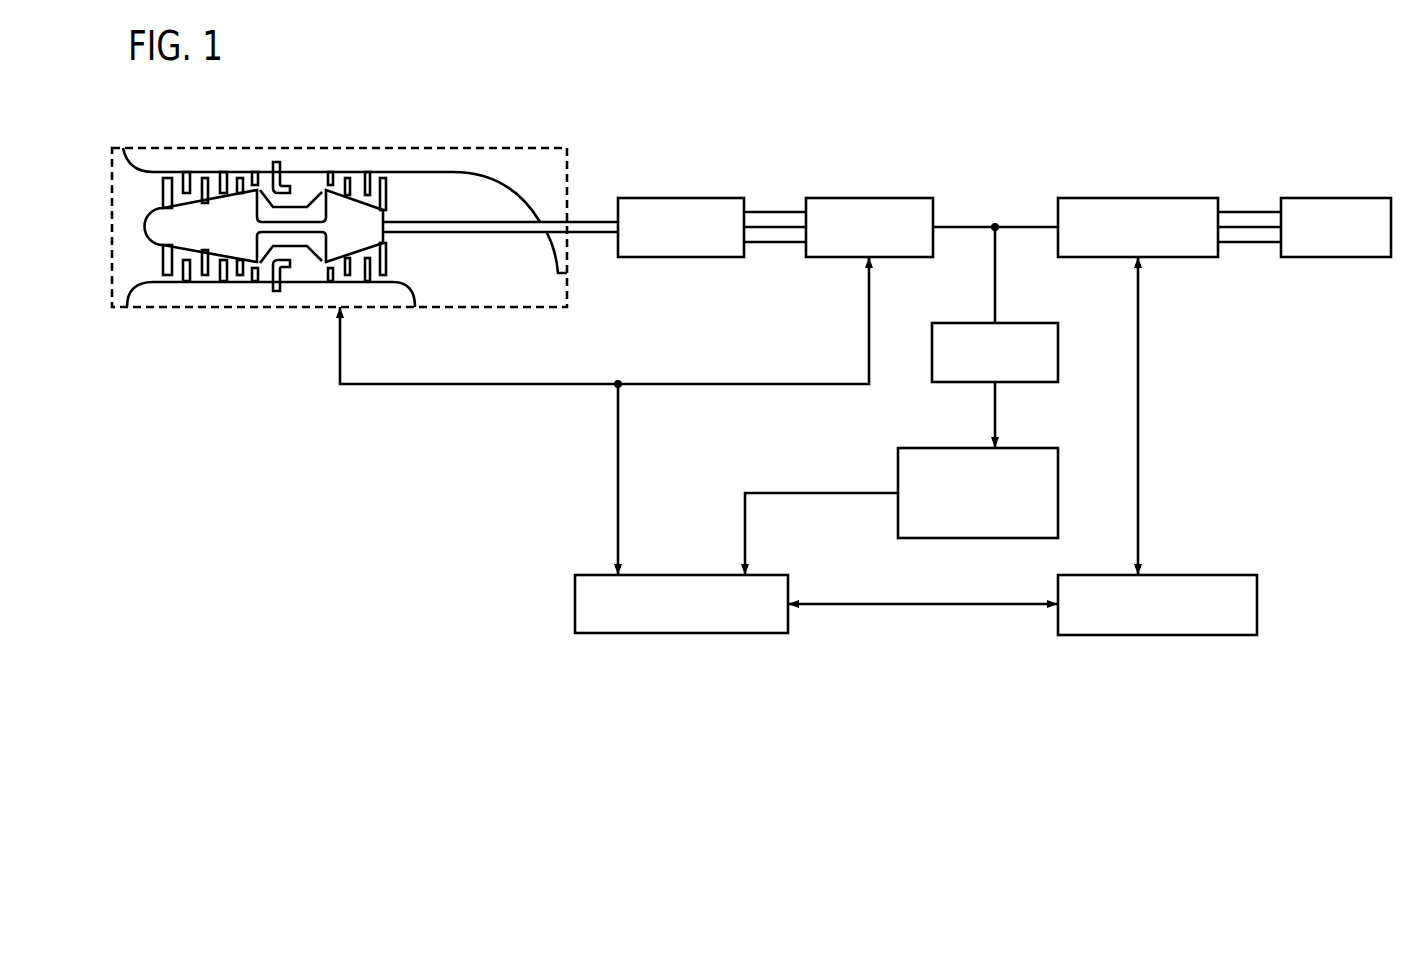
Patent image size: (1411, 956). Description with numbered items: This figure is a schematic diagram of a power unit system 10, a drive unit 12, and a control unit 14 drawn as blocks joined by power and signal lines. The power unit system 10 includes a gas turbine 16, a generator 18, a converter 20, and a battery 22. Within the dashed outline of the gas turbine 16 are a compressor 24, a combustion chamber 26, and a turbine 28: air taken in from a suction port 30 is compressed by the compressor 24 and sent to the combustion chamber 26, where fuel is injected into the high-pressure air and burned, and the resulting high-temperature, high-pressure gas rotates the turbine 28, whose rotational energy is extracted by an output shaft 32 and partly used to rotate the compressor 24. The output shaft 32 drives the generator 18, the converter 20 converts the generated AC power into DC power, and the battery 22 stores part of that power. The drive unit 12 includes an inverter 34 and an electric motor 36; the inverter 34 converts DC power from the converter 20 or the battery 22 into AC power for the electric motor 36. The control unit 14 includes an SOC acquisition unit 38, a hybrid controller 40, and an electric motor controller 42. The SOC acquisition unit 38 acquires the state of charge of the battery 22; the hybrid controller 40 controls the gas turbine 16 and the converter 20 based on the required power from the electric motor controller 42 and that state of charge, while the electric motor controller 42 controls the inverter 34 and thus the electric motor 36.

The power unit system 10 is at (788, 162).
The drive unit 12 is at (1203, 163).
The control unit 14 is at (917, 643).
The gas turbine 16 is at (403, 145).
The generator 18 is at (658, 197).
The converter 20 is at (870, 197).
The battery 22 is at (1060, 353).
The compressor 24 is at (212, 205).
The combustion chamber 26 is at (297, 190).
The turbine 28 is at (335, 202).
The suction port 30 is at (130, 180).
The output shaft 32 is at (465, 222).
The inverter 34 is at (1138, 197).
The electric motor 36 is at (1337, 197).
The SOC acquisition unit 38 is at (1060, 478).
The hybrid controller 40 is at (575, 604).
The electric motor controller 42 is at (1258, 603).